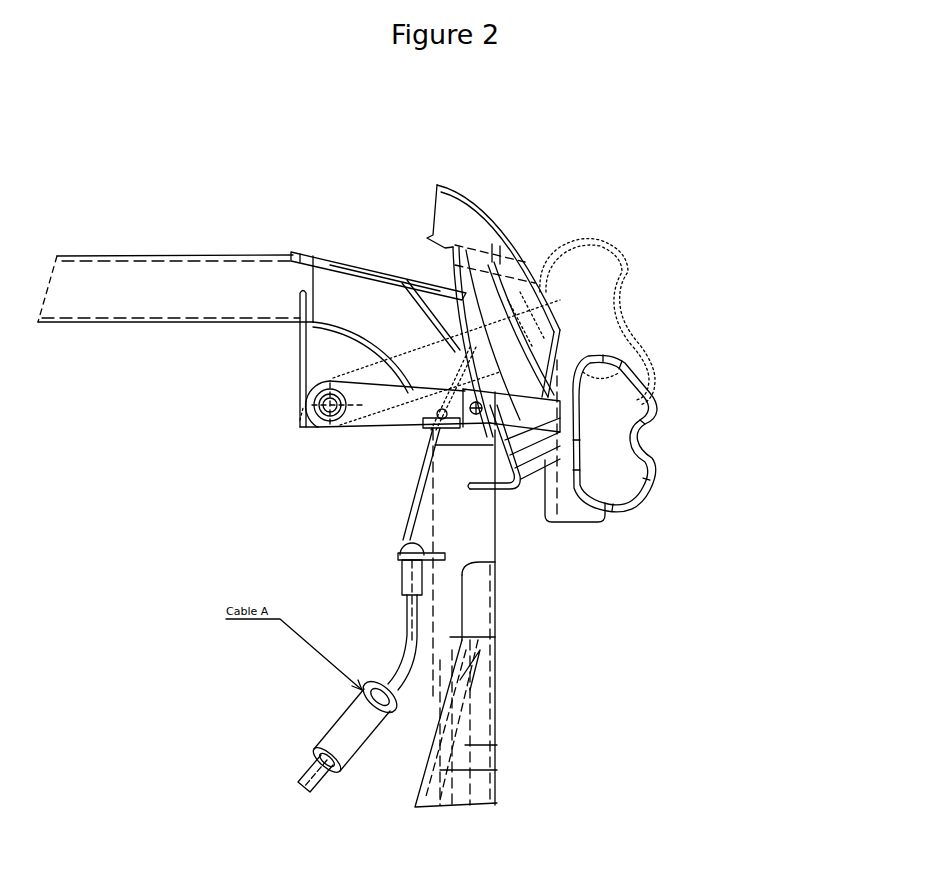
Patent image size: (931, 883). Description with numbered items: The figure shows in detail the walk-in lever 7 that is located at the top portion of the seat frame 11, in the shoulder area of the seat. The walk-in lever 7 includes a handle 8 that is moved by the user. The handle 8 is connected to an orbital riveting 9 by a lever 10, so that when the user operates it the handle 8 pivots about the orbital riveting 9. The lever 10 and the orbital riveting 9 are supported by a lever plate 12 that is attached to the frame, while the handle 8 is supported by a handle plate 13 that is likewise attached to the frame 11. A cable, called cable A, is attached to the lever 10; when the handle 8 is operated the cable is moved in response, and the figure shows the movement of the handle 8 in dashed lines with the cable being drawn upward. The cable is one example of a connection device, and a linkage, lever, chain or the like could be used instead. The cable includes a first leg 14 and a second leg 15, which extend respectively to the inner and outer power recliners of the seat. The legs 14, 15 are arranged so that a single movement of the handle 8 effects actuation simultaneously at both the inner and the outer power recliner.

The walk-in lever 7 is at (607, 227).
The handle 8 is at (655, 473).
The orbital riveting 9 is at (325, 420).
The lever 10 is at (360, 432).
The seat frame 11 is at (165, 255).
The lever plate 12 is at (296, 370).
The handle plate 13 is at (348, 257).
The first leg 14 is at (284, 778).
The second leg 15 is at (312, 792).